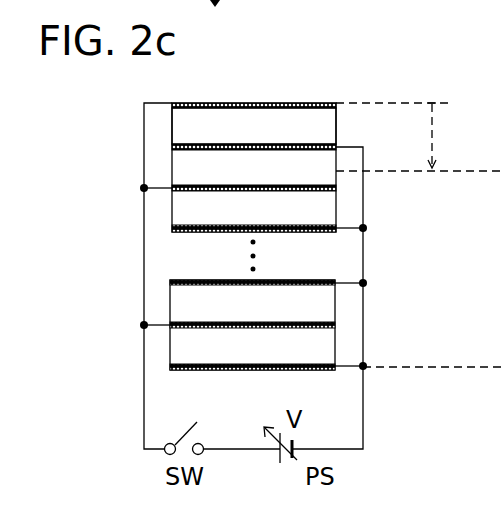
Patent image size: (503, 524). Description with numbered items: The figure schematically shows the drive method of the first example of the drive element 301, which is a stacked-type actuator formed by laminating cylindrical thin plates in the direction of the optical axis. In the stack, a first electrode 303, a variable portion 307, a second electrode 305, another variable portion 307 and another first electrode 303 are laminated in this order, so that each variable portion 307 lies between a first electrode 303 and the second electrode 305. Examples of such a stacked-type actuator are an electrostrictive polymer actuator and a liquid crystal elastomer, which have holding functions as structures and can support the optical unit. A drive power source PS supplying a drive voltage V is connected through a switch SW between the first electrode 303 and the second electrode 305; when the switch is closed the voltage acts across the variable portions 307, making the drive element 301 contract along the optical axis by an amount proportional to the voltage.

The drive element 301 is at (398, 84).
The first electrode 303 is at (203, 183).
The second electrode 305 is at (312, 222).
The variable portion 307 is at (280, 120).